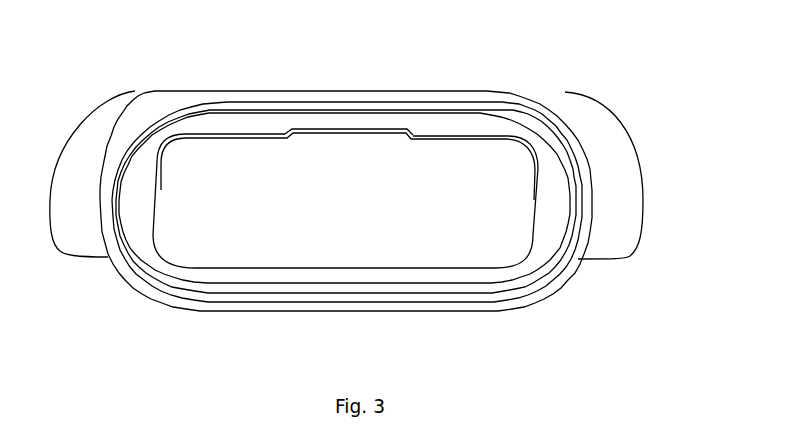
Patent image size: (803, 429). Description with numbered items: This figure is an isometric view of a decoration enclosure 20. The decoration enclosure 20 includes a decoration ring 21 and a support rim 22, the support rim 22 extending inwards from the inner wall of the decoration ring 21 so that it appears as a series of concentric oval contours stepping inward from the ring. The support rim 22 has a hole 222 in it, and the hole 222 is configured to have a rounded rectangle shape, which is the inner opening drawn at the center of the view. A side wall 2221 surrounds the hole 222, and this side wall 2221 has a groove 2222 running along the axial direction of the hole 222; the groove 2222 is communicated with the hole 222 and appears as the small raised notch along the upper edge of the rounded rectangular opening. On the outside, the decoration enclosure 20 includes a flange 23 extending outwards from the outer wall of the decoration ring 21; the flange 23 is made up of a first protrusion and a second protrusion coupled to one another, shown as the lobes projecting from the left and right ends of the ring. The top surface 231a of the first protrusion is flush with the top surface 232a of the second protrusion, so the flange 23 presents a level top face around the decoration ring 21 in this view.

The decoration enclosure 20 is at (200, 45).
The decoration ring 21 is at (507, 292).
The support rim 22 is at (487, 128).
The hole 222 is at (443, 153).
The side wall 2221 is at (233, 137).
The groove 2222 is at (375, 135).
The flange 23 is at (100, 125).
The top surface of the first protrusion 231a is at (607, 147).
The top surface of the second protrusion 232a is at (568, 278).